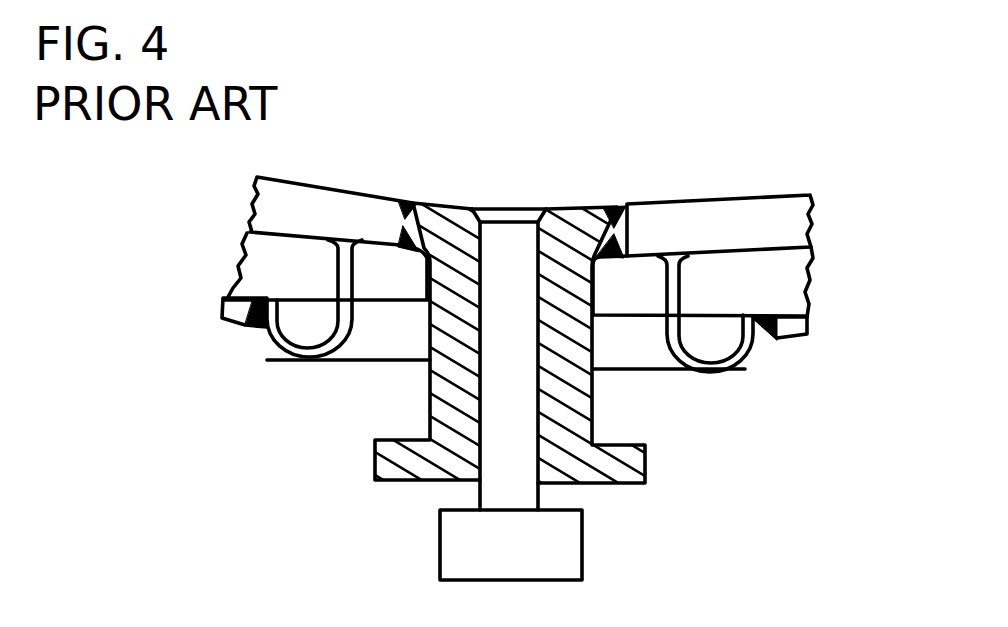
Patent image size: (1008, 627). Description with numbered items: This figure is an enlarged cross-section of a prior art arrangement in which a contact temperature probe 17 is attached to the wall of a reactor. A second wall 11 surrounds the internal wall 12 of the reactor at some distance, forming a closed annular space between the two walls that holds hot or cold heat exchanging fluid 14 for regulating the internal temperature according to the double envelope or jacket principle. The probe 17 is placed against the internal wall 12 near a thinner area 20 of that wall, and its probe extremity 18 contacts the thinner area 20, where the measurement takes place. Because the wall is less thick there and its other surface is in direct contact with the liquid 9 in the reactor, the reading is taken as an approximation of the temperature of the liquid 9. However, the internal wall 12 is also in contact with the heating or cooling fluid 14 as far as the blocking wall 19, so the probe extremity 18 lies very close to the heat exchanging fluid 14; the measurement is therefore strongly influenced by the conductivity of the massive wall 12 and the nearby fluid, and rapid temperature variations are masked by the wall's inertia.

The liquid 9 is at (762, 113).
The second wall 11 is at (243, 303).
The internal wall 12 is at (250, 200).
The heat exchanging fluid 14 is at (248, 255).
The probe 17 is at (500, 382).
The probe extremity 18 is at (520, 218).
The blocking wall 19 is at (347, 278).
The thinner area 20 is at (483, 212).